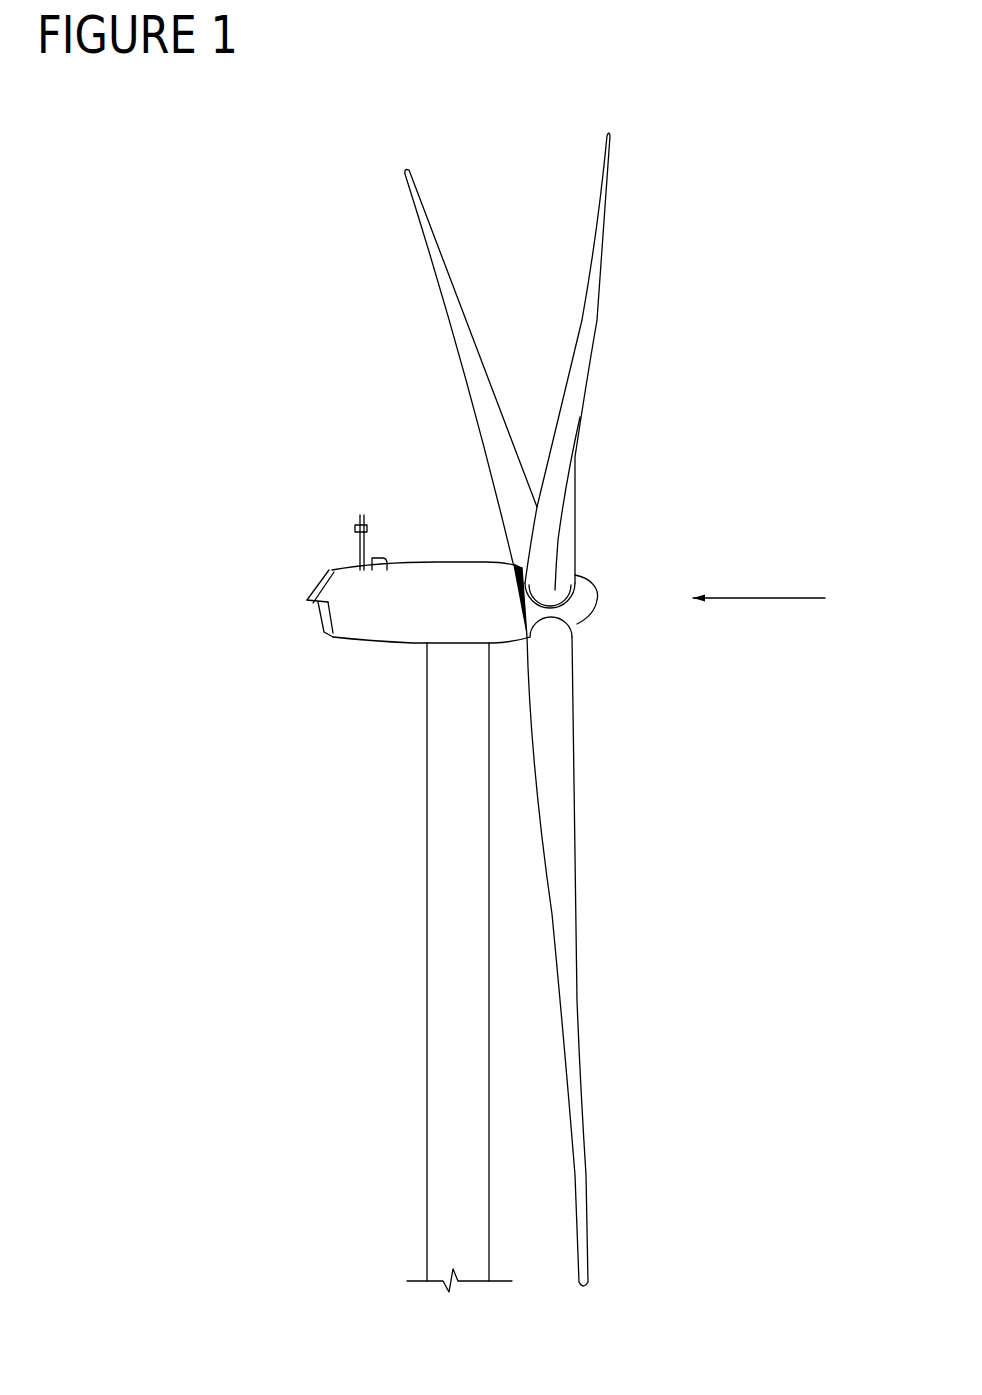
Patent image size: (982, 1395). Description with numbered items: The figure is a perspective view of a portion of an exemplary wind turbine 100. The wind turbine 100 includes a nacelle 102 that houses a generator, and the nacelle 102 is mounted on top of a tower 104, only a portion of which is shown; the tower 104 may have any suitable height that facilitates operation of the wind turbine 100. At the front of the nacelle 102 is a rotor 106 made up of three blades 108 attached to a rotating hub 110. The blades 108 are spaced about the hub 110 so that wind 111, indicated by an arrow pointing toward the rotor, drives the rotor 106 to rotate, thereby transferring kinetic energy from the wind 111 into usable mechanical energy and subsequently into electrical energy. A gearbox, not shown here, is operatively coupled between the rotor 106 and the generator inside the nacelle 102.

The wind turbine 100 is at (297, 217).
The nacelle 102 is at (358, 642).
The tower 104 is at (427, 915).
The rotor 106 is at (647, 347).
The blades 108 is at (440, 252).
The hub 110 is at (590, 616).
The wind 111 is at (748, 597).